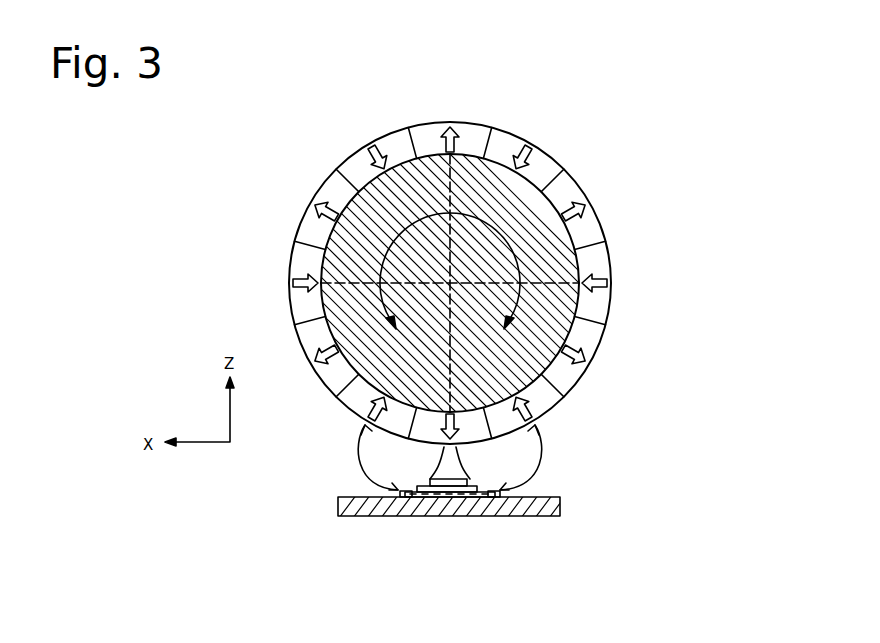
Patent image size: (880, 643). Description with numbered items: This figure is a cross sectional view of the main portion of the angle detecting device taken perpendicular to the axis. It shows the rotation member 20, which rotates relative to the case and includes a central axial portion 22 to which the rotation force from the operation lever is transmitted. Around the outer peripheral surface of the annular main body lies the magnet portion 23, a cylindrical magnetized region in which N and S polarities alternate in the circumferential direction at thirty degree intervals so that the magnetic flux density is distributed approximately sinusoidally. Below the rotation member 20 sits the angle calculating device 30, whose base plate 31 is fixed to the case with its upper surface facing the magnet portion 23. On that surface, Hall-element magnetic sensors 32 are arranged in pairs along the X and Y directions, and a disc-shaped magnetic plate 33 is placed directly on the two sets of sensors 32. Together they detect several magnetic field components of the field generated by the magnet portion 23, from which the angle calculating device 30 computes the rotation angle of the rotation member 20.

The rotation member 20 is at (466, 284).
The axial portion 22 is at (578, 266).
The magnet portion 23 is at (324, 179).
The angle calculating device 30 is at (466, 505).
The base plate 31 is at (363, 516).
The magnetic sensor 32 is at (427, 514).
The magnetic plate 33 is at (432, 480).